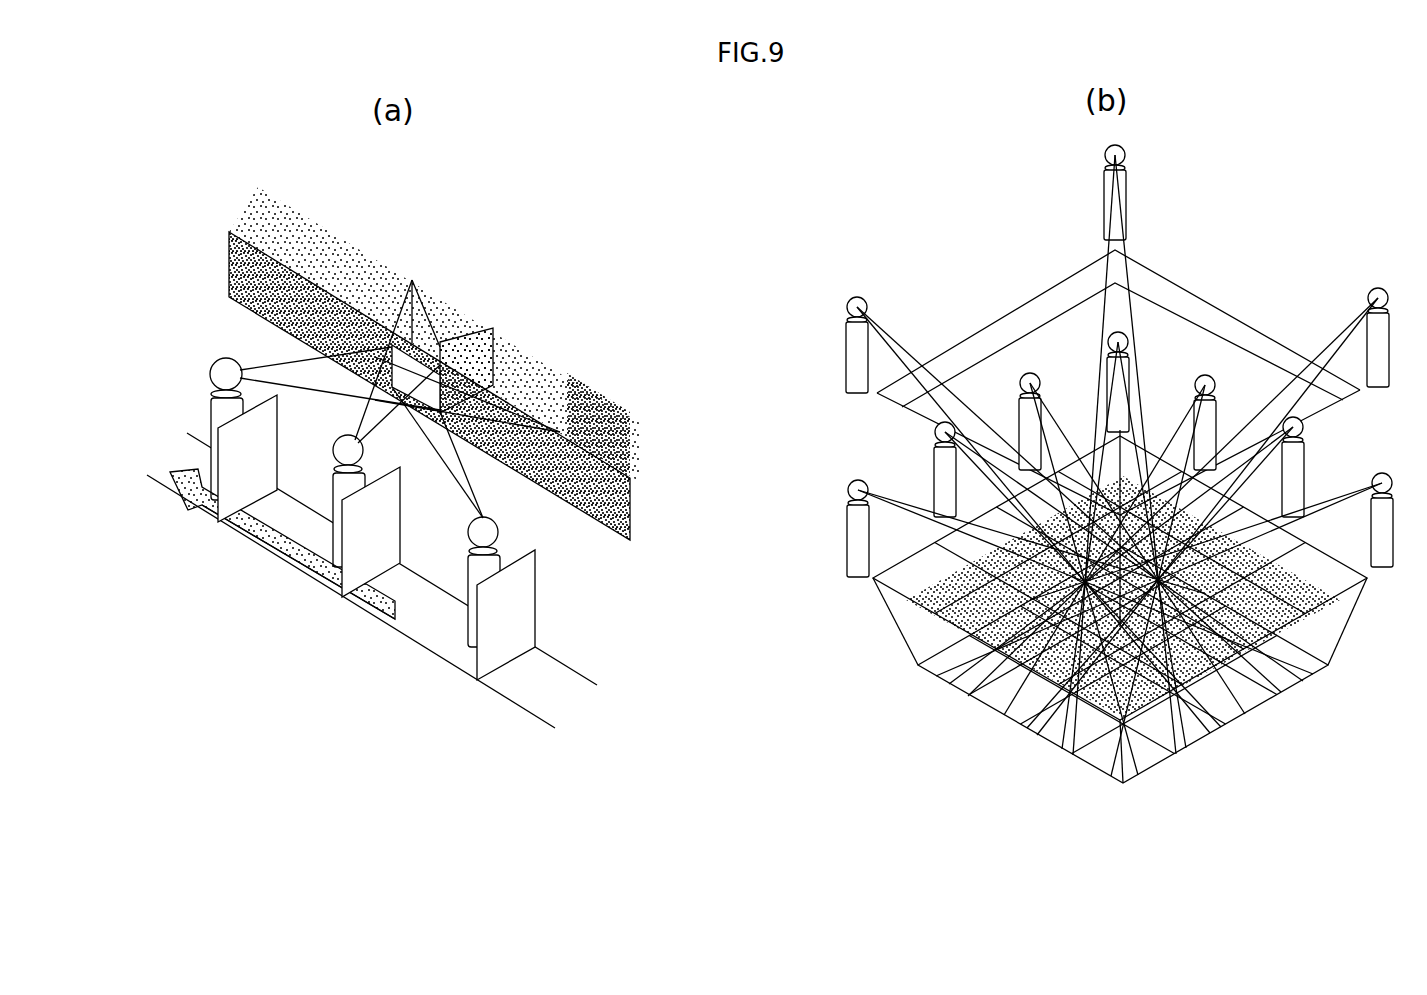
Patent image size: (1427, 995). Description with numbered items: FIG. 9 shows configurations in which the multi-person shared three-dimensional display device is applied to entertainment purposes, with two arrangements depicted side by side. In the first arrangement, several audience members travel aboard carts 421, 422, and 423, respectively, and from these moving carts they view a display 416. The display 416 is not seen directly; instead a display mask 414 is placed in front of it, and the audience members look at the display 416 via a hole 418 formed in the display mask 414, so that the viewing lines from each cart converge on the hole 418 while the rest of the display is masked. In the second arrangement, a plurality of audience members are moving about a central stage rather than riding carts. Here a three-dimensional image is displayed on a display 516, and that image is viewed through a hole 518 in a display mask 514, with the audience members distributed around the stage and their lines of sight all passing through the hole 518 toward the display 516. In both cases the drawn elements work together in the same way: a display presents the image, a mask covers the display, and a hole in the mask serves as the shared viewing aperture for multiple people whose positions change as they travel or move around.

The display mask 414 is at (620, 532).
The display 416 is at (318, 232).
The hole 418 is at (427, 382).
The cart 421 is at (248, 484).
The cart 422 is at (375, 560).
The cart 423 is at (508, 648).
The display mask 514 is at (1310, 610).
The display 516 is at (1245, 700).
The hole 518 is at (1103, 773).